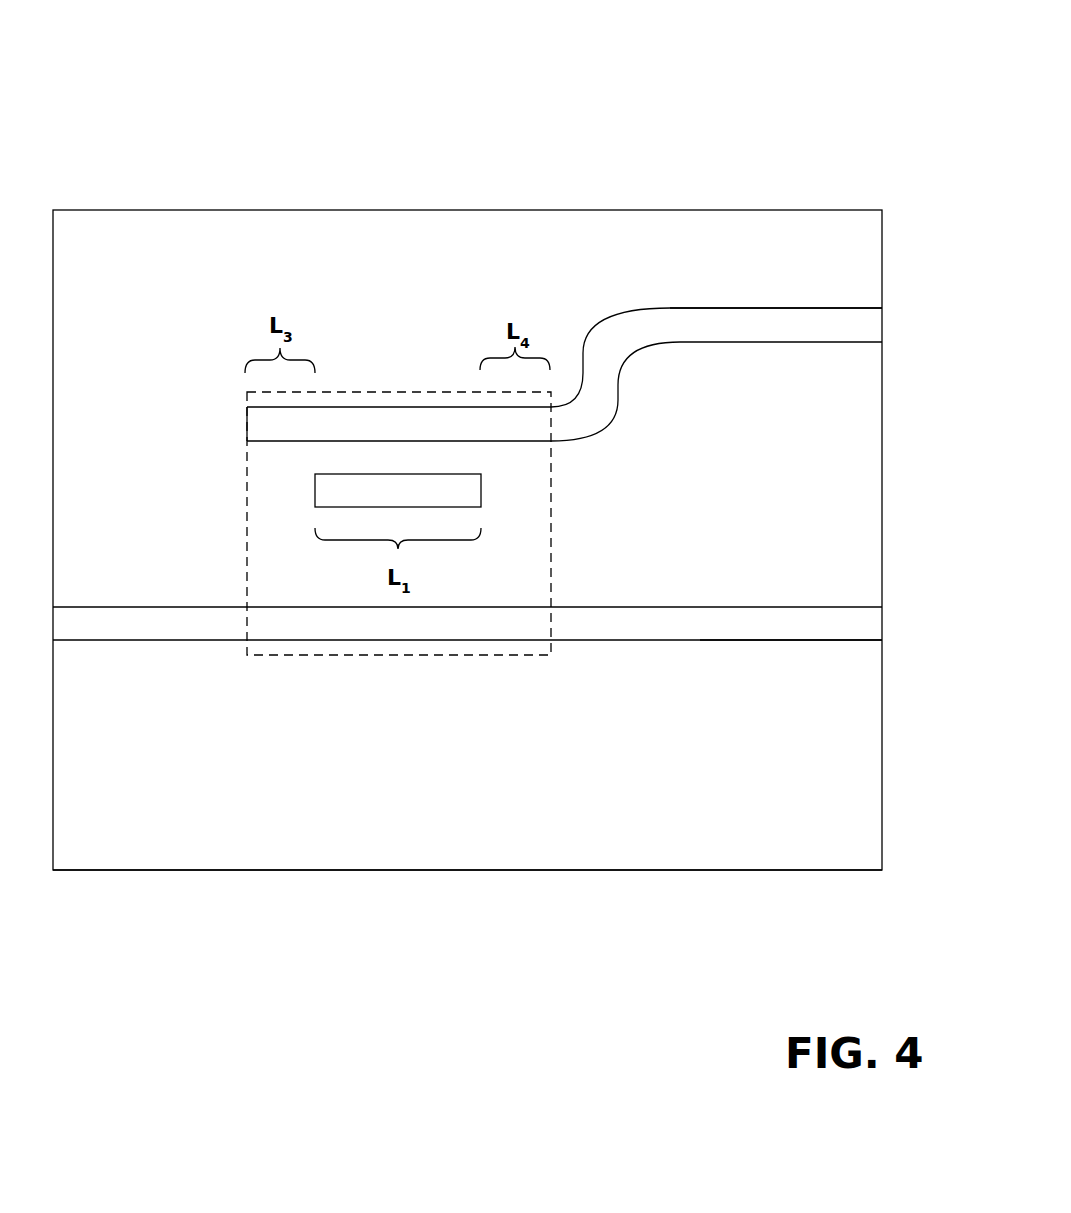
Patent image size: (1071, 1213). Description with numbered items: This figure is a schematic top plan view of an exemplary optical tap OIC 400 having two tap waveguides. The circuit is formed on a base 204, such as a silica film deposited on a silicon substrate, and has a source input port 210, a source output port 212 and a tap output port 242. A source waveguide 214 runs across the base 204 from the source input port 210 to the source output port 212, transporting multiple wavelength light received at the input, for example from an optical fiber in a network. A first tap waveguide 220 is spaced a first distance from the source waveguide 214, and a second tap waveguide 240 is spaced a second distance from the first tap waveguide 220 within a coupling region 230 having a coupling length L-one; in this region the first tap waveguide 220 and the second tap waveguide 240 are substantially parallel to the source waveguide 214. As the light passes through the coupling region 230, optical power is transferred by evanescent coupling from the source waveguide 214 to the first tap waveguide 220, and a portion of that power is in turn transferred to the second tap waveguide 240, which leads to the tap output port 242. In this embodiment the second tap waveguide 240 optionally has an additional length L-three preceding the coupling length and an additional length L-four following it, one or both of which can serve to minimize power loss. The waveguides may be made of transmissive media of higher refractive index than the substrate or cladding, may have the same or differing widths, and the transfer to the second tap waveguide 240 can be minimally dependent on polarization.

The optical tap OIC 400 is at (793, 44).
The base 204 is at (92, 846).
The source input port 210 is at (53, 620).
The source output port 212 is at (877, 622).
The source waveguide 214 is at (165, 622).
The first tap waveguide 220 is at (466, 490).
The coupling region 230 is at (551, 543).
The second tap waveguide 240 is at (498, 433).
The tap output port 242 is at (882, 323).